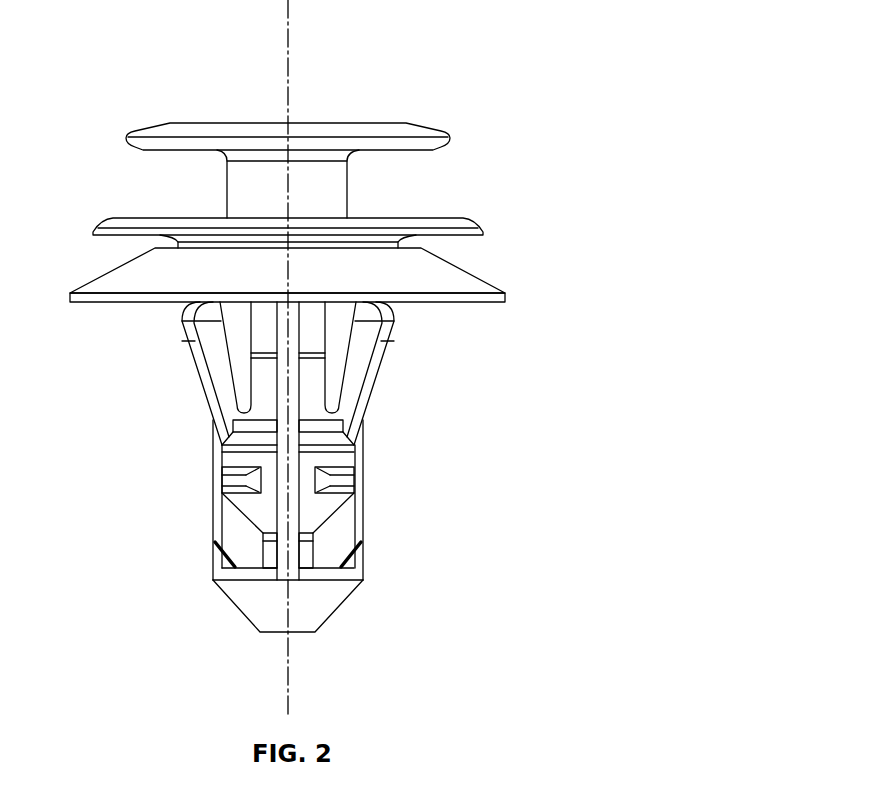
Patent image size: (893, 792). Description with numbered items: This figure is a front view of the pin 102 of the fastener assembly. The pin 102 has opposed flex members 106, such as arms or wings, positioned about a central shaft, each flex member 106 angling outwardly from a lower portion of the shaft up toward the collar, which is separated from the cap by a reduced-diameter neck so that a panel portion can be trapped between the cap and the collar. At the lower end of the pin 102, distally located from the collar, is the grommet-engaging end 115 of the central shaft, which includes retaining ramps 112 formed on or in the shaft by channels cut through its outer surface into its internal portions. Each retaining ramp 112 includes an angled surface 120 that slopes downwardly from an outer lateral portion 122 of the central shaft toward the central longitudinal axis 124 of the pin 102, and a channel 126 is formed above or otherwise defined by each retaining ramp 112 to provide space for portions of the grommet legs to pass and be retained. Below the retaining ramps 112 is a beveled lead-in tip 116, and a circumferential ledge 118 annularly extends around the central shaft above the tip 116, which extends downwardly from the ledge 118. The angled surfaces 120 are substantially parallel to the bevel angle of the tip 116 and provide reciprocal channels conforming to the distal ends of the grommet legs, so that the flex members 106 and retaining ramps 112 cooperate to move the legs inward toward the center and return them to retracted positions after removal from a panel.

The pin 102 is at (472, 76).
The flex members 106 is at (189, 349).
The retaining ramps 112 is at (233, 547).
The grommet-engaging end 115 is at (366, 569).
The lead-in tip 116 is at (318, 617).
The circumferential ledge 118 is at (256, 579).
The angled surface 120 is at (232, 561).
The outer lateral portion 122 is at (352, 414).
The central longitudinal axis 124 is at (292, 33).
The channel 126 is at (216, 498).